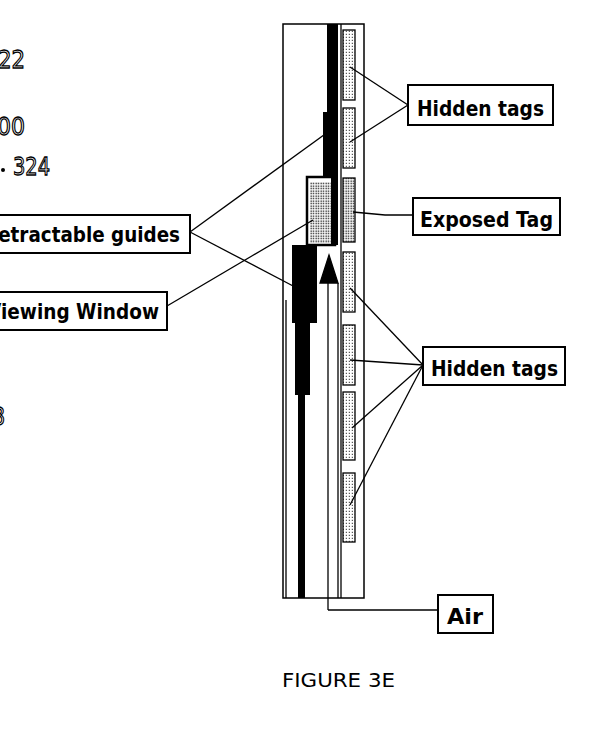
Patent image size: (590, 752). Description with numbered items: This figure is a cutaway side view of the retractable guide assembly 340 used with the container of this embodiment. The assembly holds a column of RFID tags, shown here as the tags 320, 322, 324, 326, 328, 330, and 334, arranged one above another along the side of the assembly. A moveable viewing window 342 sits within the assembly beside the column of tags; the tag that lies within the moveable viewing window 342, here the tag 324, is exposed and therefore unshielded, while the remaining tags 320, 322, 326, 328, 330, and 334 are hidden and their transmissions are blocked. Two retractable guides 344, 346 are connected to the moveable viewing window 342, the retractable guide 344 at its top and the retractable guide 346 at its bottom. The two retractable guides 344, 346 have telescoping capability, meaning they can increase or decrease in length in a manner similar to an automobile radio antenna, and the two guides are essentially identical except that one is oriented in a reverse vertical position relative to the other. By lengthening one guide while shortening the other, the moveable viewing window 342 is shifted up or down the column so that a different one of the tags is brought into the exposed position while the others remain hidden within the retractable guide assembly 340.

The RFID tag 320 is at (352, 45).
The RFID tag 322 is at (352, 145).
The RFID tag 324 is at (353, 193).
The RFID tag 326 is at (353, 272).
The RFID tag 328 is at (350, 340).
The RFID tag 330 is at (352, 445).
The hidden tag 334 is at (352, 522).
The retractable guide assembly 340 is at (287, 313).
The moveable viewing window 342 is at (320, 194).
The retractable guide 344 is at (327, 106).
The retractable guide 346 is at (298, 393).